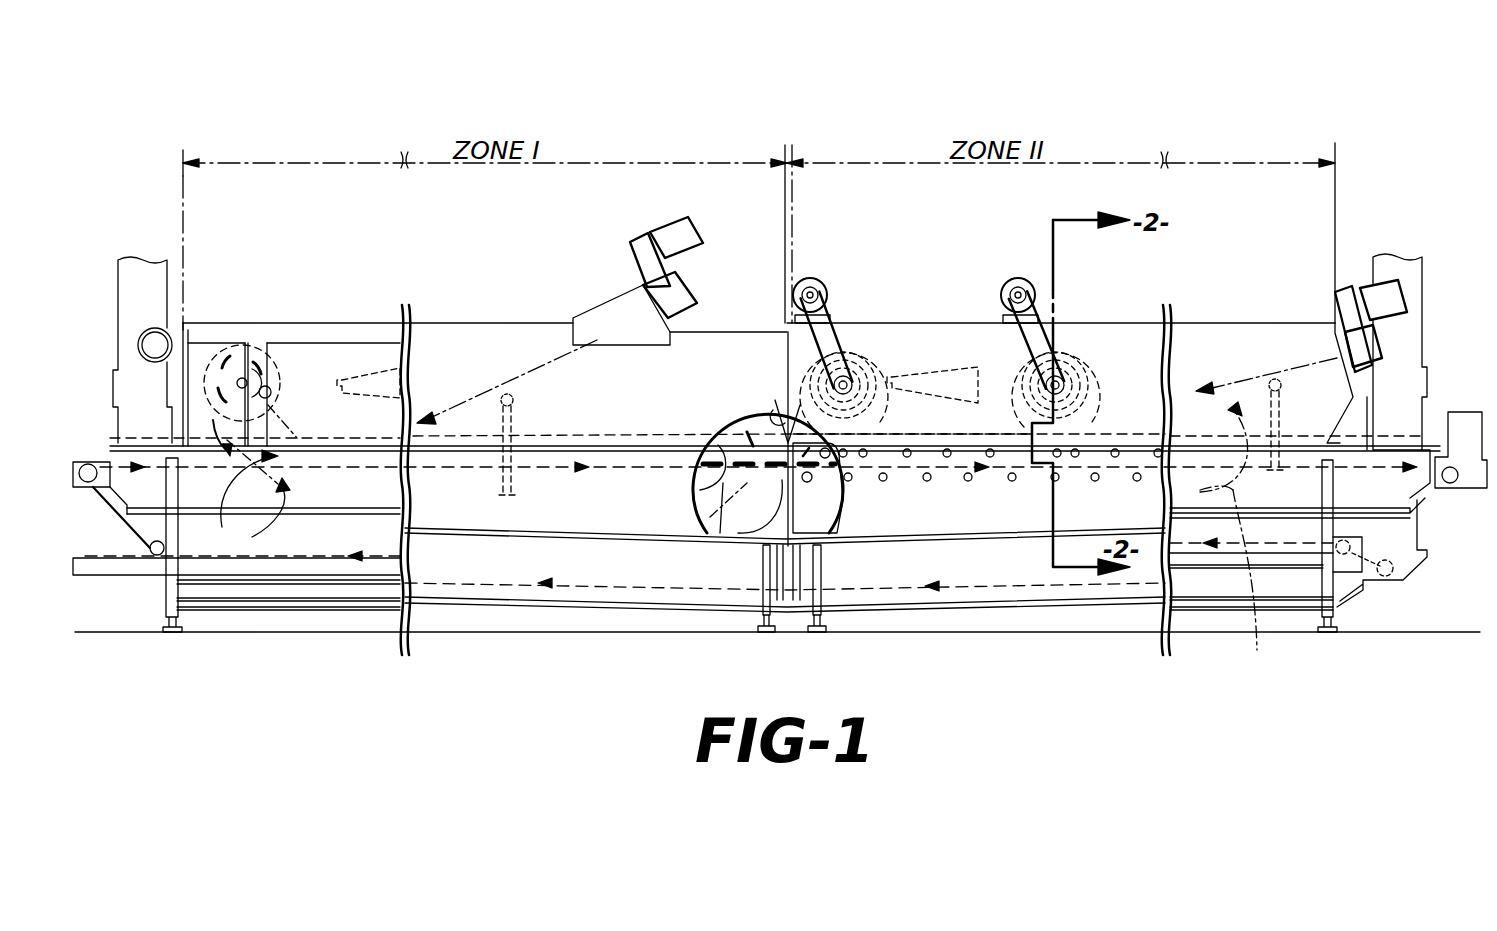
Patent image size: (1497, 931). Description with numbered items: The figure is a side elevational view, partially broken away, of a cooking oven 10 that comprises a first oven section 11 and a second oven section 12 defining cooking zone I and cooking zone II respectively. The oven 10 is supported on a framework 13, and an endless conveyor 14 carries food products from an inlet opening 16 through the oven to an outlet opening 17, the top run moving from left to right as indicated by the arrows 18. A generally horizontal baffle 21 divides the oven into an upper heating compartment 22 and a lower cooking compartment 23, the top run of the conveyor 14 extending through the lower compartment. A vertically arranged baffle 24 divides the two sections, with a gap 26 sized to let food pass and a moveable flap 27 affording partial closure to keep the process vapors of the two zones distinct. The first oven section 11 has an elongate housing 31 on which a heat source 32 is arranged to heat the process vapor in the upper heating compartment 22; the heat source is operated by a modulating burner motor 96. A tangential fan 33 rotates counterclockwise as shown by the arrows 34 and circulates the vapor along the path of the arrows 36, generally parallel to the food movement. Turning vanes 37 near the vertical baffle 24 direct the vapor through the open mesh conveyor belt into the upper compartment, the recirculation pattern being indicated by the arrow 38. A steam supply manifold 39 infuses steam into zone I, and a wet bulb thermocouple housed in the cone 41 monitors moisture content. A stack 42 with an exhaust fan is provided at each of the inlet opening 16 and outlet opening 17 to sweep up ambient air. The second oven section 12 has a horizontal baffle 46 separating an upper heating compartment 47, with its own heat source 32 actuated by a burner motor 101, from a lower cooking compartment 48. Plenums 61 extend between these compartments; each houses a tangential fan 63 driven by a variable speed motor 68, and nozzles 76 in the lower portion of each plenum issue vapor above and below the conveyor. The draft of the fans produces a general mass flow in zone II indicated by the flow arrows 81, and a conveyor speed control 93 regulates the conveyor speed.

The oven 10 is at (497, 289).
The first oven section 11 is at (270, 320).
The second oven section 12 is at (1240, 312).
The framework 13 is at (153, 599).
The endless conveyor 14 is at (135, 535).
The inlet opening 16 is at (107, 457).
The outlet opening 17 is at (1430, 432).
The arrows 18 is at (142, 460).
The horizontal baffle 21 is at (606, 440).
The upper heating compartment 22 is at (350, 424).
The lower cooking compartment 23 is at (378, 503).
The vertical baffle 24 is at (778, 402).
The gap 26 is at (770, 430).
The flap 27 is at (793, 434).
The housing 31 is at (514, 323).
The heat source 32 is at (624, 302).
The tangential fan 33 is at (283, 362).
The arrows 34 is at (272, 386).
The arrows 36 is at (255, 479).
The turning vanes 37 is at (723, 505).
The arrow 38 is at (724, 445).
The steam supply manifold 39 is at (508, 398).
The cone 41 is at (363, 375).
The stack 42 is at (150, 262).
The horizontal baffle 46 is at (1214, 415).
The upper heating compartment 47 is at (1318, 424).
The lower cooking compartment 48 is at (1302, 503).
The plenums 61 is at (878, 385).
The tangential fan 63 is at (866, 345).
The motor 68 is at (820, 282).
The nozzles 76 is at (883, 481).
The flow arrows 81 is at (1240, 588).
The conveyor speed control 93 is at (1464, 412).
The modulating burner motor 96 is at (668, 236).
The burner motor 101 is at (1394, 297).